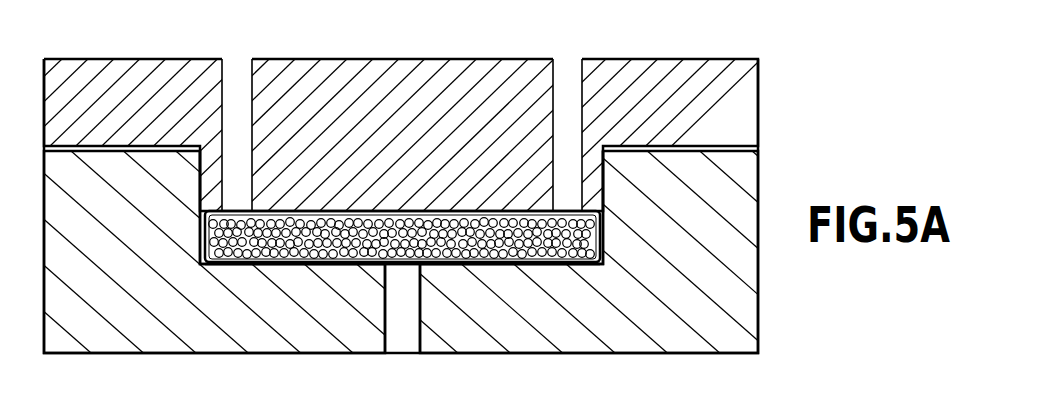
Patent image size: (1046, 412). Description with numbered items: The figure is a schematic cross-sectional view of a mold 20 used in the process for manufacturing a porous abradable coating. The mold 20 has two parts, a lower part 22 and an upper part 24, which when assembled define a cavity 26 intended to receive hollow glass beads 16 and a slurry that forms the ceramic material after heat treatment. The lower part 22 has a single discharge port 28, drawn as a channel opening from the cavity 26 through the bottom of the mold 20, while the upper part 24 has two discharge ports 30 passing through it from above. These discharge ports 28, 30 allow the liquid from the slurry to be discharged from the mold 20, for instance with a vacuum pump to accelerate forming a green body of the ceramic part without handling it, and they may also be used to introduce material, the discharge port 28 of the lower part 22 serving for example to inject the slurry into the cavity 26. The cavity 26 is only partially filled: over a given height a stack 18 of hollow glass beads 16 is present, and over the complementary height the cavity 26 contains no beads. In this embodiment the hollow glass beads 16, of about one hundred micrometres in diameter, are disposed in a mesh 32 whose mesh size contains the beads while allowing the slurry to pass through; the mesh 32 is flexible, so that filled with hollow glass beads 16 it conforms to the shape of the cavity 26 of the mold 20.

The hollow glass beads 16 is at (466, 222).
The stack of hollow glass beads 18 is at (205, 236).
The mold 20 is at (789, 155).
The lower part 22 is at (713, 302).
The upper part 24 is at (689, 84).
The cavity 26 is at (306, 266).
The discharge port 28 is at (404, 336).
The discharge ports 30 is at (236, 71).
The mesh 32 is at (515, 265).